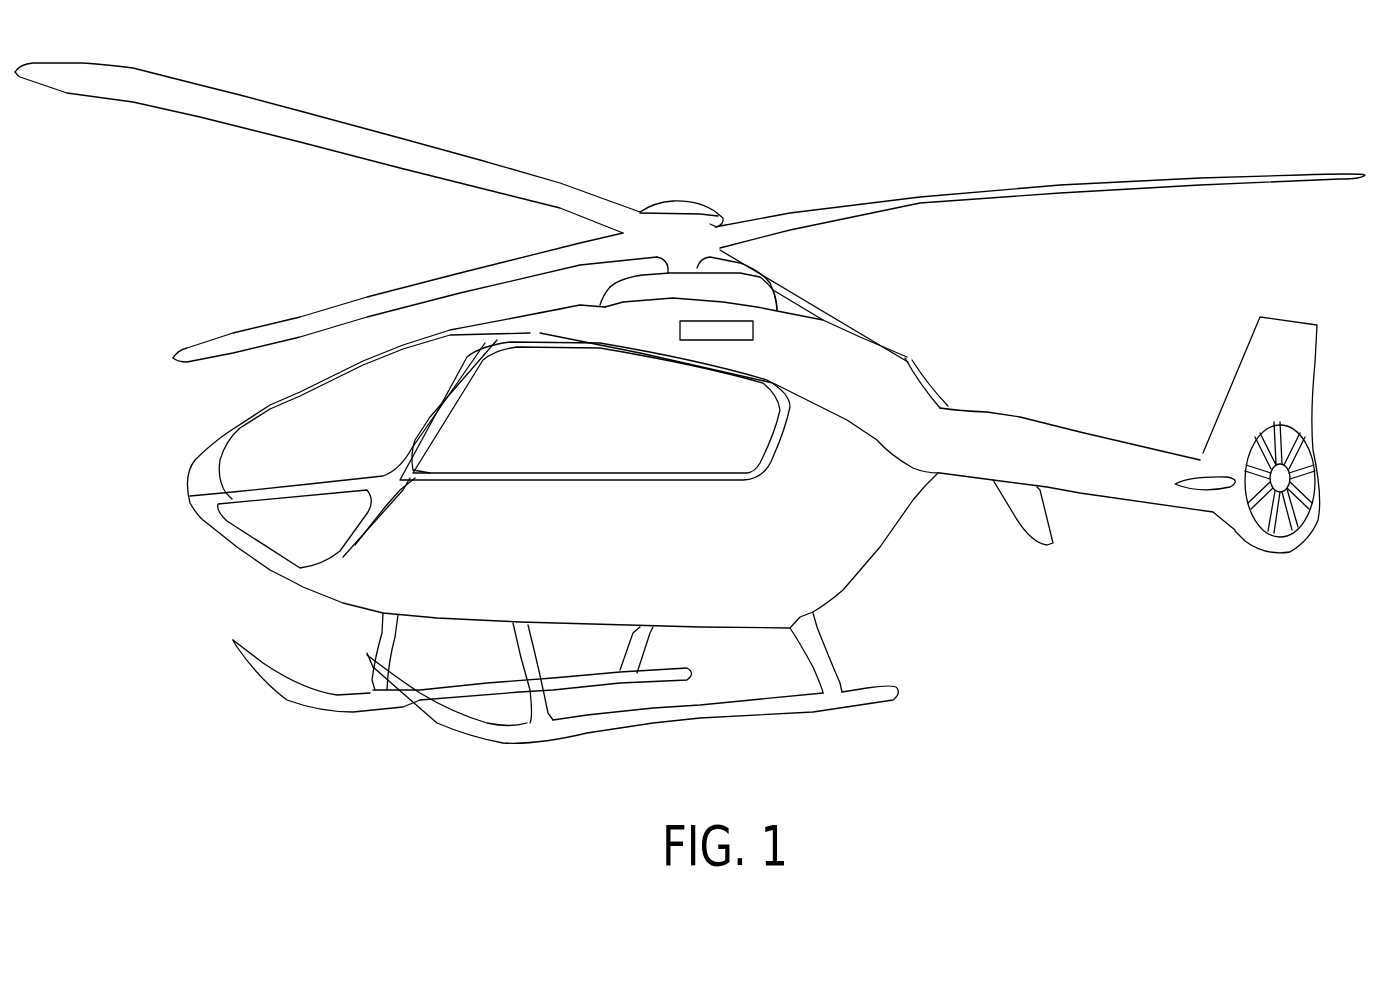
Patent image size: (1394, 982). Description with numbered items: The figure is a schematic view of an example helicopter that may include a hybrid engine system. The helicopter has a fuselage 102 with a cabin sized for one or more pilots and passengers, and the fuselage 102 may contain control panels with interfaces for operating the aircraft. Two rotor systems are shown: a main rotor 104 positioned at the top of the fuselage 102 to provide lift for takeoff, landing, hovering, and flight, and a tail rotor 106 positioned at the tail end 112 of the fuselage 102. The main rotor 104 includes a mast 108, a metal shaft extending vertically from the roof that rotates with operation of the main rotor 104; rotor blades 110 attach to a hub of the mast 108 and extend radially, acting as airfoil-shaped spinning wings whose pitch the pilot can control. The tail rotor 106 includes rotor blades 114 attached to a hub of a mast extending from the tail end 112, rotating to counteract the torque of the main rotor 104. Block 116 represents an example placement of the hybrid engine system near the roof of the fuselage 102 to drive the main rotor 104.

The fuselage 102 is at (267, 411).
The main rotor 104 is at (656, 166).
The tail rotor 106 is at (1237, 567).
The mast 108 is at (688, 199).
The rotor blades 110 is at (1135, 183).
The tail end 112 is at (1260, 312).
The rotor blades 114 is at (1313, 463).
The block 116 is at (753, 330).